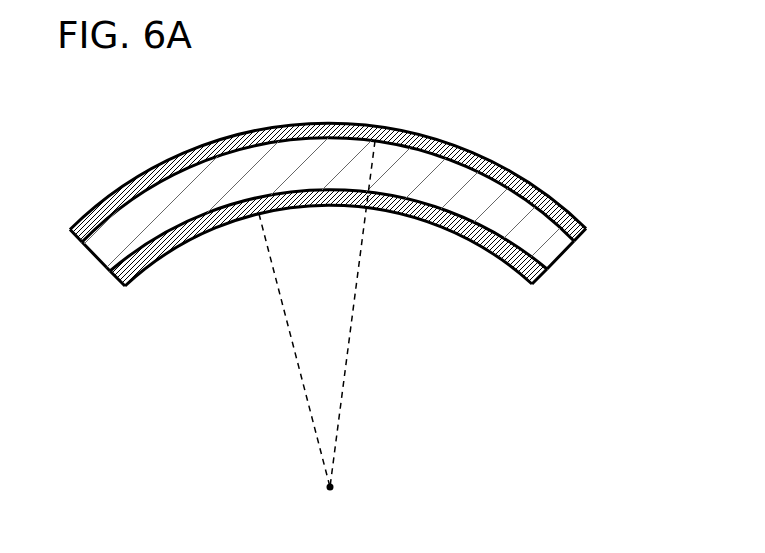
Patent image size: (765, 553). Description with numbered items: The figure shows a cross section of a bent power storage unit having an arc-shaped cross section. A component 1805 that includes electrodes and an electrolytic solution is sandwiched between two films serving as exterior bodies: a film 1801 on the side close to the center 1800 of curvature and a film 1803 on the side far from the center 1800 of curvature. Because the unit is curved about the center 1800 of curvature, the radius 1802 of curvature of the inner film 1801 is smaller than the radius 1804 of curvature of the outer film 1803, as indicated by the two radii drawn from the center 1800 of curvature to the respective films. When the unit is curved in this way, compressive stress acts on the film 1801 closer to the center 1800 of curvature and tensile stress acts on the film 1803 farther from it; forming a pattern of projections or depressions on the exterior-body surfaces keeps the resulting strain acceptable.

The center of curvature 1800 is at (330, 487).
The film 1801 is at (183, 237).
The radius of curvature 1802 is at (303, 388).
The film 1803 is at (511, 170).
The radius of curvature 1804 is at (348, 356).
The component 1805 is at (542, 242).